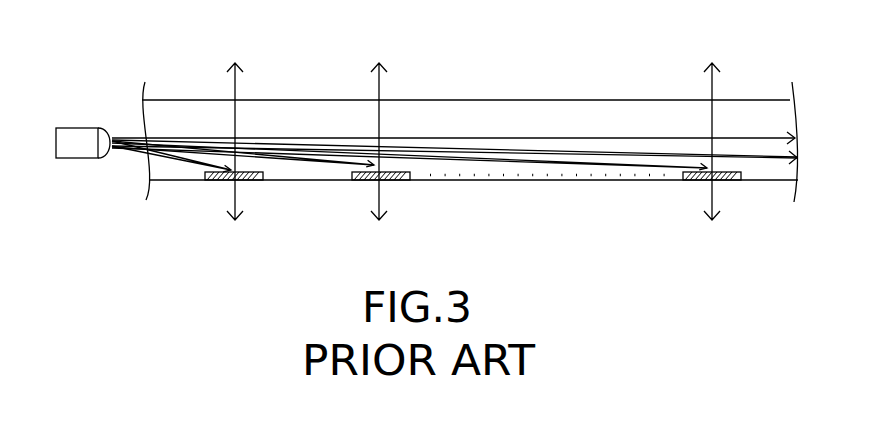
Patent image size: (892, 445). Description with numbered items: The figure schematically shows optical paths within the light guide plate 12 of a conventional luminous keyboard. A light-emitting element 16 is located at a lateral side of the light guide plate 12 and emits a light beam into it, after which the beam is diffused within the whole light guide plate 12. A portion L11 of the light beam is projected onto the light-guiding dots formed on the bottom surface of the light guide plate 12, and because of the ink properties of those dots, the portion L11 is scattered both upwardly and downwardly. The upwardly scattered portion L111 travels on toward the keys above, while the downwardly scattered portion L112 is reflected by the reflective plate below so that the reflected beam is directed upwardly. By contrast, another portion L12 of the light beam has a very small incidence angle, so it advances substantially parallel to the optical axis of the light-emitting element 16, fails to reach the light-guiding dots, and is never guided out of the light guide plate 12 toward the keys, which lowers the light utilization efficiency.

The light-emitting element 16 is at (85, 148).
The light guide plate 12 is at (332, 115).
The portion of the light beam L11 is at (203, 168).
The portion of the light beam L12 is at (443, 138).
The upwardly scattered portion of the light beam L111 is at (232, 85).
The downwardly scattered portion of the light beam L112 is at (232, 200).